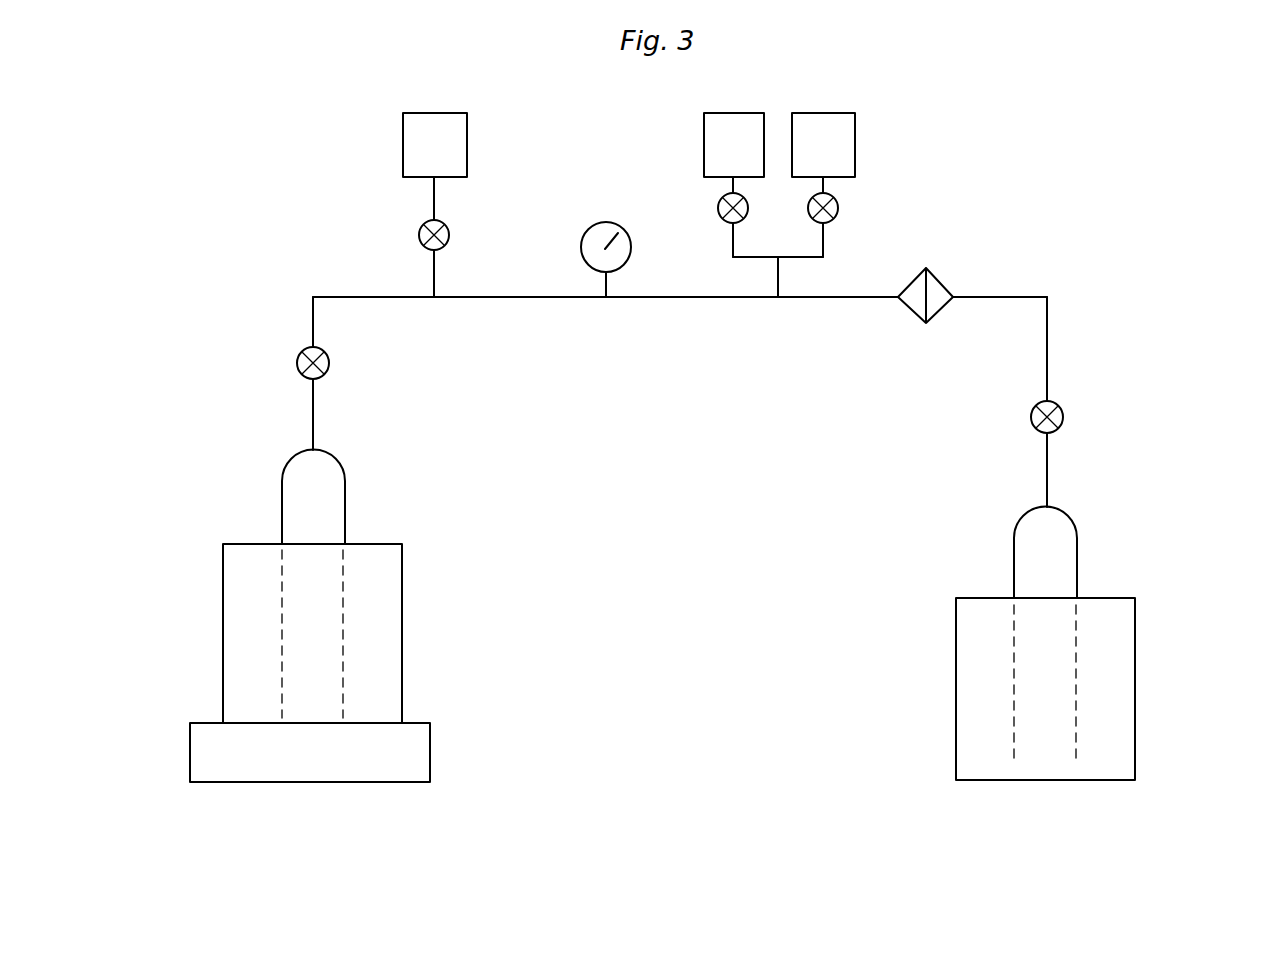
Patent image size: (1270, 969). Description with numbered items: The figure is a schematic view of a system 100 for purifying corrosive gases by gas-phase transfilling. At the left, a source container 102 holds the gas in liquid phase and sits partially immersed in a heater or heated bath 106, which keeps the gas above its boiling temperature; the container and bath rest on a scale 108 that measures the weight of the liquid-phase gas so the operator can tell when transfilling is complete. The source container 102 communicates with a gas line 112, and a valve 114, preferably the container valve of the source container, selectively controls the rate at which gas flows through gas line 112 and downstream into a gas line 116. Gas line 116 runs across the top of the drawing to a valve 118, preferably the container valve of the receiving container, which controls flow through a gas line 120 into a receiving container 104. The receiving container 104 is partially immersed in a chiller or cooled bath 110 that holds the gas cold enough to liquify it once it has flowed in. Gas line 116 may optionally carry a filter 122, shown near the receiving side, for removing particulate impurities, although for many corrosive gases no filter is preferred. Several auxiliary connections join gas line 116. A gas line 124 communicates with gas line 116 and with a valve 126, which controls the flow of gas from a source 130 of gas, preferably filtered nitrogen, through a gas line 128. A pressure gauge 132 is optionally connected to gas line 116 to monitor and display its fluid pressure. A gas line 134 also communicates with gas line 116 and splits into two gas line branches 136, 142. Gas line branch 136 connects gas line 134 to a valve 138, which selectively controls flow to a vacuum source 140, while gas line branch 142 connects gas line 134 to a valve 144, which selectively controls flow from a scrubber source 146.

The system 100 is at (943, 820).
The source container 102 is at (345, 497).
The receiving container 104 is at (1077, 552).
The heater or heated bath 106 is at (402, 630).
The scale 108 is at (430, 750).
The chiller or cooled bath 110 is at (1135, 673).
The gas line 112 is at (313, 412).
The valve 114 is at (330, 363).
The gas line 116 is at (524, 298).
The valve 118 is at (1063, 417).
The gas line 120 is at (1047, 466).
The filter 122 is at (938, 280).
The gas line 124 is at (434, 272).
The valve 126 is at (418, 235).
The gas line 128 is at (434, 198).
The source of gas 130 is at (403, 147).
The pressure gauge 132 is at (581, 247).
The gas line 134 is at (778, 277).
The gas line branch 136 is at (733, 244).
The valve 138 is at (718, 208).
The vacuum source 140 is at (704, 143).
The gas line branch 142 is at (823, 244).
The valve 144 is at (838, 208).
The scrubber source 146 is at (855, 142).